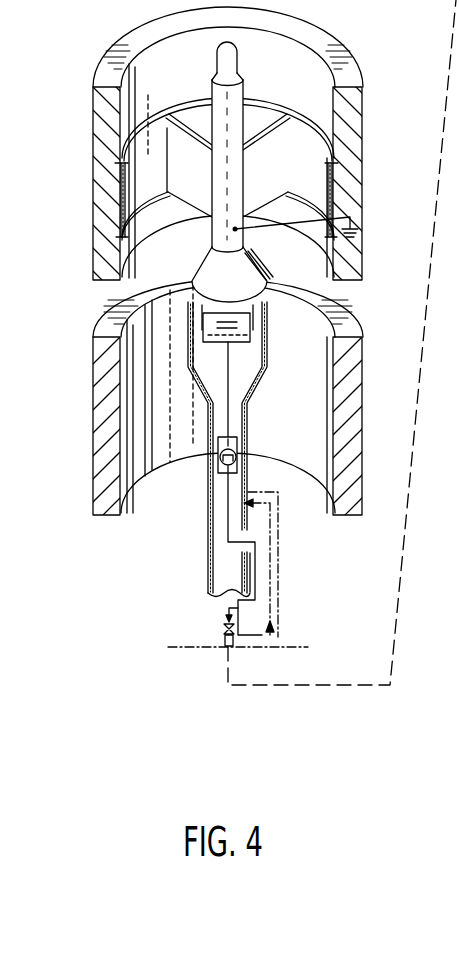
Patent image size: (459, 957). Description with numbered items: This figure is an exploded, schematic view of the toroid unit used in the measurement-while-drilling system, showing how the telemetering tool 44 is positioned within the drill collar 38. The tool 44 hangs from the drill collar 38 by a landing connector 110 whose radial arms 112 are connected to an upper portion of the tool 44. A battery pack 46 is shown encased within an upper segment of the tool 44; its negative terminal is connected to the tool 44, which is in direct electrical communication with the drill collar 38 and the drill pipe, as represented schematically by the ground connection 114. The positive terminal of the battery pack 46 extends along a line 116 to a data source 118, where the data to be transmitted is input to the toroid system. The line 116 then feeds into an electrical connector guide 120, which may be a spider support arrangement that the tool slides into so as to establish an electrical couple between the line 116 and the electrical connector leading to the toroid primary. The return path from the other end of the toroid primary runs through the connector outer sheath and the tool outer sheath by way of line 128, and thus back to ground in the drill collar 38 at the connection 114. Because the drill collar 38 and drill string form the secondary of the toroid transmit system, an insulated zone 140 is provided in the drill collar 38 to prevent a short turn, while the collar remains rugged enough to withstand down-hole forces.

The drill collar 38 is at (93, 158).
The telemetering tool 44 is at (243, 127).
The battery pack 46 is at (250, 331).
The landing connector 110 is at (140, 135).
The radial arms 112 is at (198, 206).
The electrical communication to drill collar 114 is at (350, 217).
The line 116 is at (232, 378).
The data source 118 is at (217, 467).
The electrical connector guide 120 is at (283, 564).
The line 128 is at (272, 592).
The insulated zone 140 is at (89, 484).